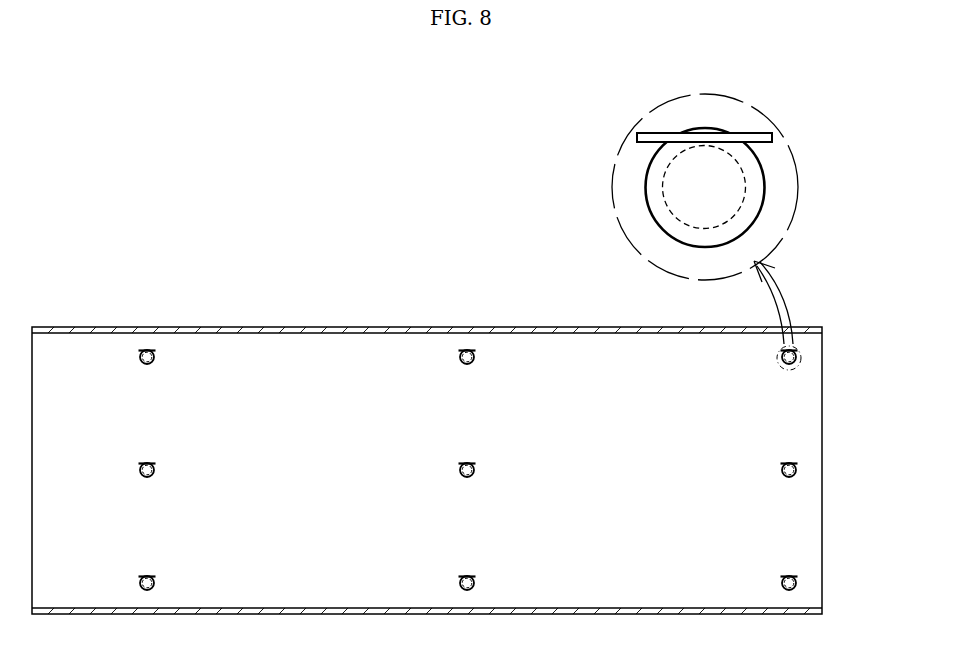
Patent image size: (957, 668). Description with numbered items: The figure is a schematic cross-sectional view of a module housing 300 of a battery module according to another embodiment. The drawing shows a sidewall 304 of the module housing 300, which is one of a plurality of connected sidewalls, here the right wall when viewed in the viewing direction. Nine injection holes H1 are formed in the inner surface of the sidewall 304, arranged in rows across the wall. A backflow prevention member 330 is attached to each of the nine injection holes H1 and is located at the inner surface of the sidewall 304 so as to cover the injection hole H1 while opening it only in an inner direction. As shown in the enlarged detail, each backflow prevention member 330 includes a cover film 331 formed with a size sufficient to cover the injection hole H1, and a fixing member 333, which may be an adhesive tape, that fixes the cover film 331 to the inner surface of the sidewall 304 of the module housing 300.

The module housing 300 is at (152, 270).
The right wall 304 is at (823, 380).
The injection hole H1 is at (147, 350).
The backflow prevention member 330 is at (610, 157).
The cover film 331 is at (707, 247).
The fixing member 333 is at (663, 134).